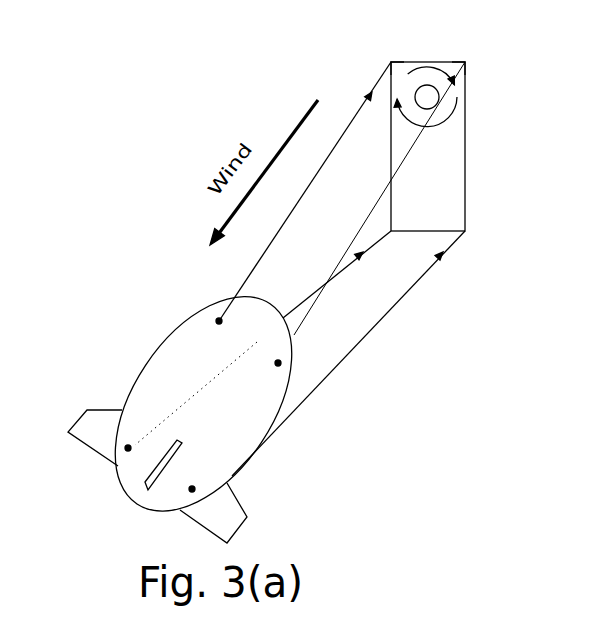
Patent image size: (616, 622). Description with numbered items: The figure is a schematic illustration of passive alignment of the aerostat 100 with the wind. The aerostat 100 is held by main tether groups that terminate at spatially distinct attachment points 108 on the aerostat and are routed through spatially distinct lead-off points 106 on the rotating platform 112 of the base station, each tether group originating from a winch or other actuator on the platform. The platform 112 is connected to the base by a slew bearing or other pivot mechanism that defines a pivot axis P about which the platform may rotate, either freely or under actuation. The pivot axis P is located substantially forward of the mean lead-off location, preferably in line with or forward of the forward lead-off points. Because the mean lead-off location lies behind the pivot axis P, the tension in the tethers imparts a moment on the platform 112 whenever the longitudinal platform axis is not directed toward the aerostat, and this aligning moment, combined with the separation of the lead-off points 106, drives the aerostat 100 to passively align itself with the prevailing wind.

The aerostat 100 is at (225, 433).
The lead-off point 106 is at (465, 231).
The tether attachment point 108 is at (128, 448).
The platform 112 is at (458, 168).
The pivot axis P is at (440, 97).